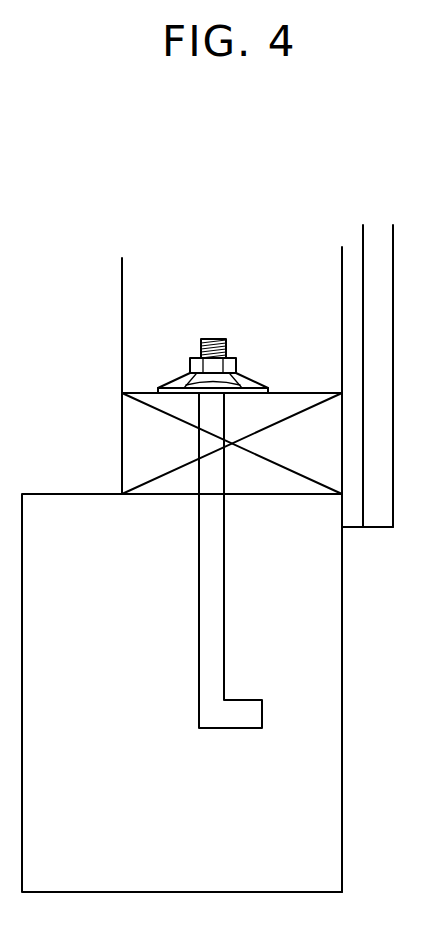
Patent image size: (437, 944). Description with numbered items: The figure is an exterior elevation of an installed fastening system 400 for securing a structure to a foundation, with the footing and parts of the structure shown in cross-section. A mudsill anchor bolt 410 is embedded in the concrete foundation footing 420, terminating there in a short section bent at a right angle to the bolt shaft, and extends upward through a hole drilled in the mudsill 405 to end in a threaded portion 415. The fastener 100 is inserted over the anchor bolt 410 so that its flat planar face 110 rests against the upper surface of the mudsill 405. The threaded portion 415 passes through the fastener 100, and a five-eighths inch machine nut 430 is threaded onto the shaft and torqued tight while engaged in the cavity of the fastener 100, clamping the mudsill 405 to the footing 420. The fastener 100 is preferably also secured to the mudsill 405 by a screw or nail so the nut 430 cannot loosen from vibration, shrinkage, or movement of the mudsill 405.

The fastening system 400 is at (203, 246).
The fastener 100 is at (243, 336).
The planar face 110 is at (248, 396).
The threaded portion 415 is at (228, 349).
The nut 430 is at (243, 361).
The mudsill 405 is at (163, 459).
The mudsill anchor bolt 410 is at (237, 683).
The foundation footing 420 is at (172, 823).